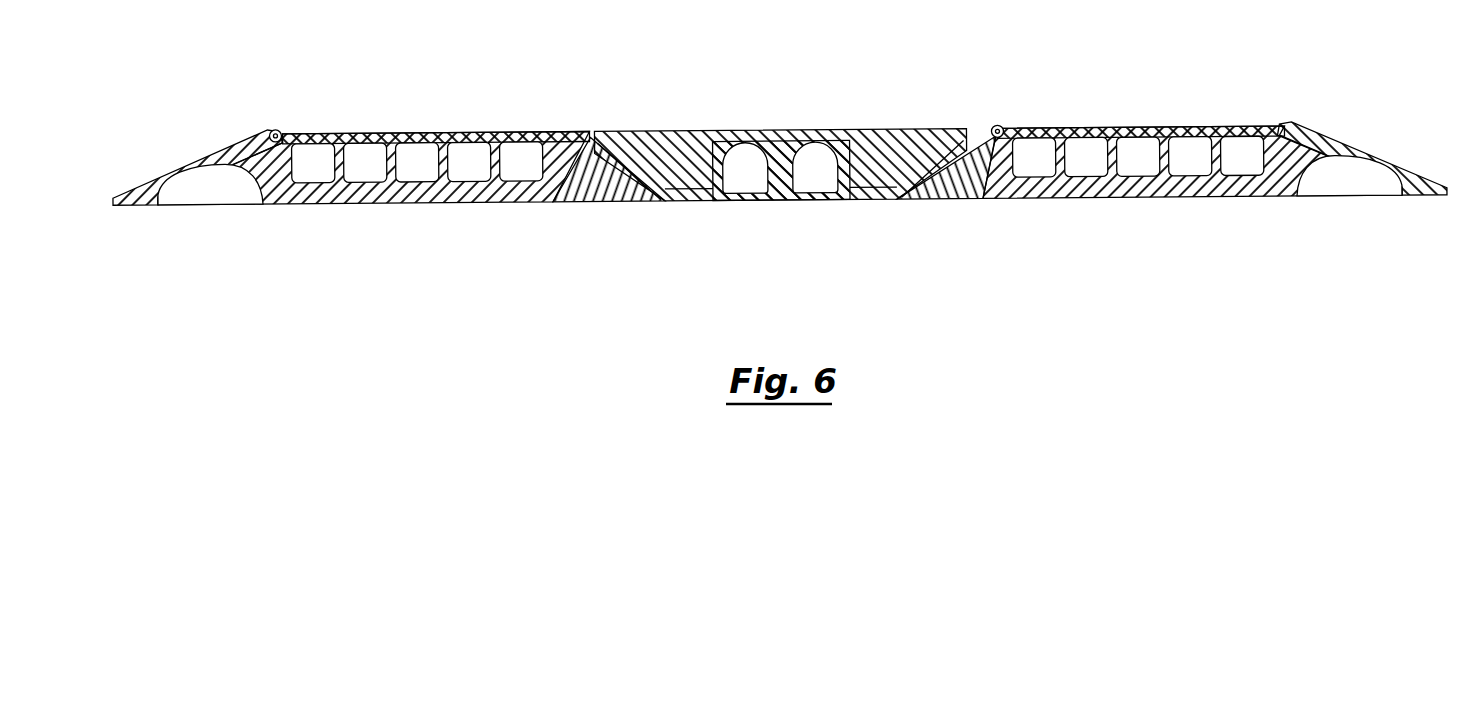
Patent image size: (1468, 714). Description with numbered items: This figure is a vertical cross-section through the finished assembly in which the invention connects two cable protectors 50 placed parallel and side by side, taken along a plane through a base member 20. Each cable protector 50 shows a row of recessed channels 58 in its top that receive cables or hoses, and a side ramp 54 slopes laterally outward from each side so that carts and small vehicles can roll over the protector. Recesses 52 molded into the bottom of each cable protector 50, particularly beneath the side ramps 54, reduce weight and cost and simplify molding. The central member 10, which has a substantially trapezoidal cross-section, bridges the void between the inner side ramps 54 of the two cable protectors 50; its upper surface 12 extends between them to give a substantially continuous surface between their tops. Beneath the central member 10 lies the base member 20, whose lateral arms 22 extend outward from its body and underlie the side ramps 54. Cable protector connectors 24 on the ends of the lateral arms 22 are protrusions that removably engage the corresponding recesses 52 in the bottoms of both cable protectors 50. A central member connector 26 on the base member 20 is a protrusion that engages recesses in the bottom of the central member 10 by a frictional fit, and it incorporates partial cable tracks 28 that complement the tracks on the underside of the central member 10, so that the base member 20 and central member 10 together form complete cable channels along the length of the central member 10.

The central member 10 is at (779, 103).
The upper surface 12 is at (780, 165).
The base member 20 is at (781, 170).
The lateral arm 22 is at (781, 188).
The cable protector connector 24 is at (778, 163).
The central member connector 26 is at (780, 167).
The partial cable track 28 is at (780, 167).
The cable protector 50 is at (779, 165).
The recess 52 is at (780, 180).
The side ramp 54 is at (779, 163).
The recessed channel 58 is at (778, 159).